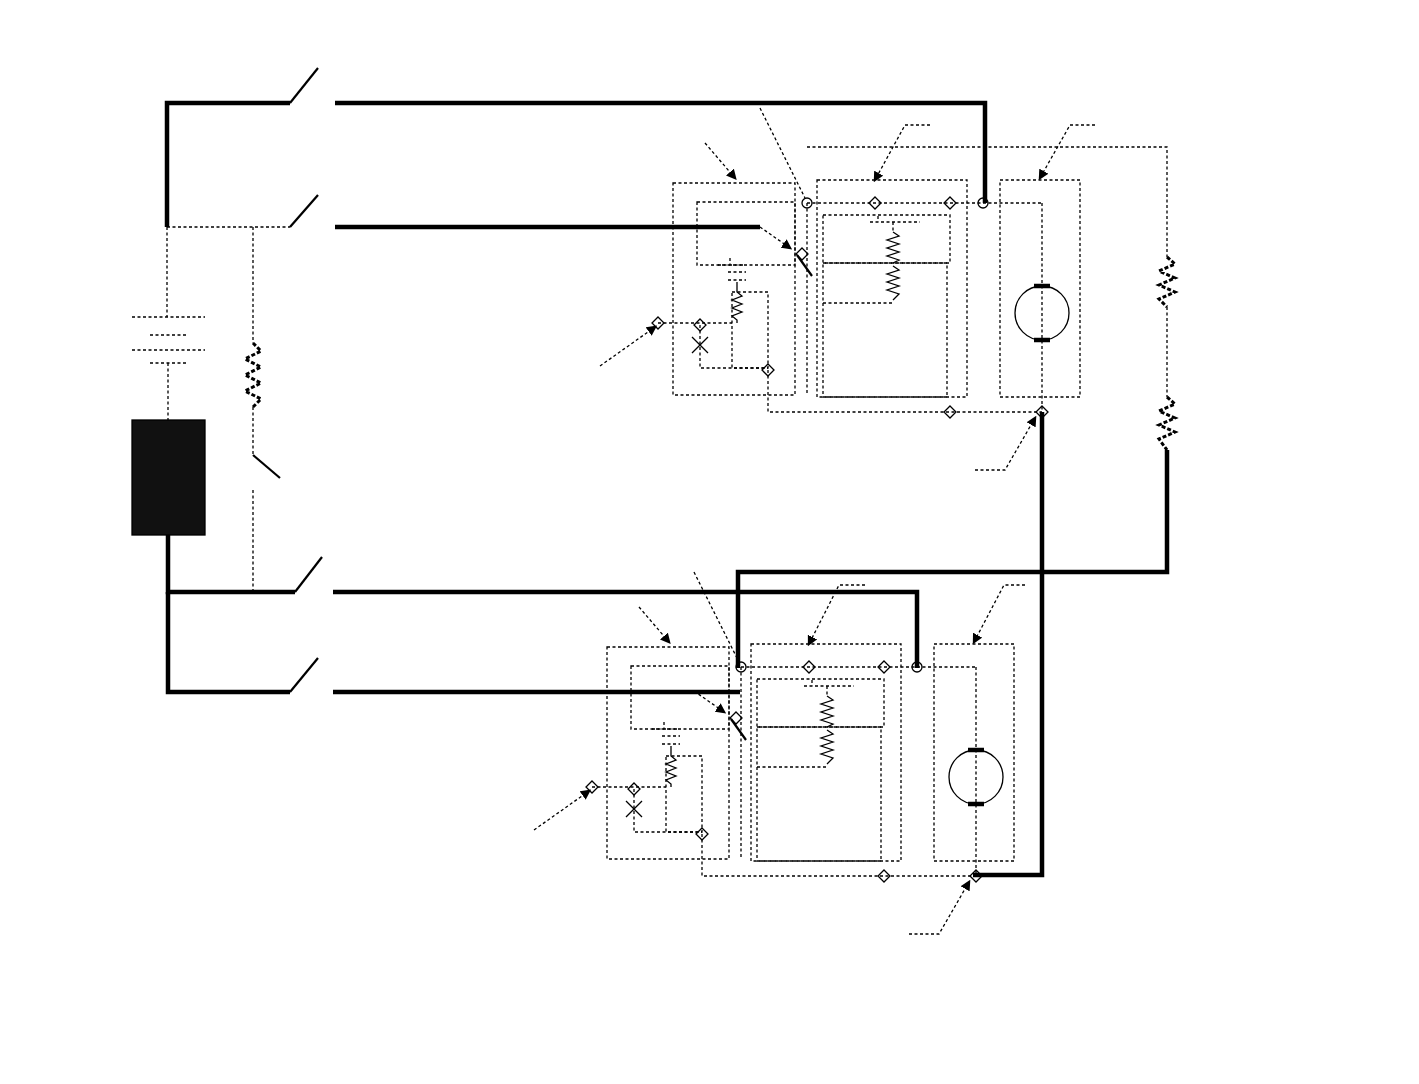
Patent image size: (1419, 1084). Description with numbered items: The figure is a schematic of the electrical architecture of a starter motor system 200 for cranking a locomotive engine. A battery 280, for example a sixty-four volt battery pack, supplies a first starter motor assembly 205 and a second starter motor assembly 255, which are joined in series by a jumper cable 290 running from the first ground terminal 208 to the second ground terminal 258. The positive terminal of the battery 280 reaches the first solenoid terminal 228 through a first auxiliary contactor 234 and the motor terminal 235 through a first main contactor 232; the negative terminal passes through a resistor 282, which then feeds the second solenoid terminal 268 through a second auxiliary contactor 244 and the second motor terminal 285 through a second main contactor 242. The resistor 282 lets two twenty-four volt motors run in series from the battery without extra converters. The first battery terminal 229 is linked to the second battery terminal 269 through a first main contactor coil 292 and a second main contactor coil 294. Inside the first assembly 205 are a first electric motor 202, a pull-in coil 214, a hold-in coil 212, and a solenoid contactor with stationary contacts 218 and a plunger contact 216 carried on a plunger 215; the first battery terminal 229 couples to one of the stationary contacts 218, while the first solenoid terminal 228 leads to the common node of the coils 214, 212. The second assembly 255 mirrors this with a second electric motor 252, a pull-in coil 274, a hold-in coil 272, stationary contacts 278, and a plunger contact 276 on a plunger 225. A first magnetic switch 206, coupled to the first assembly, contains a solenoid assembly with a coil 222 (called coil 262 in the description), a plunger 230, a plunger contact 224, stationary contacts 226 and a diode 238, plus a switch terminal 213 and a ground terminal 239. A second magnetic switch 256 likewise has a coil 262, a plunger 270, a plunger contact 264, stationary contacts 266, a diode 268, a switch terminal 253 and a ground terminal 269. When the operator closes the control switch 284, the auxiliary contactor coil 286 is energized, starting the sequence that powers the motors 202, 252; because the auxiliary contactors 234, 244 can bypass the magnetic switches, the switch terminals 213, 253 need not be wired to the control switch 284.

The starter motor system 200 is at (1272, 90).
The first electric motor 202 is at (1064, 300).
The first starter motor assembly 205 is at (942, 319).
The first magnetic switch 206 is at (714, 327).
The first ground terminal 208 is at (1050, 415).
The hold-in (HI) coil 212 is at (890, 284).
The switch terminal 213 is at (658, 316).
The pull-in (PI) coil 214 is at (890, 246).
The plunger 215 is at (893, 301).
The plunger contact 216 is at (872, 223).
The stationary contacts 218 is at (873, 201).
The first magnetic switch coil 222 is at (735, 306).
The plunger contact 224 is at (735, 278).
The plunger 225 is at (819, 794).
The stationary contacts 226 is at (722, 262).
The first solenoid terminal 228 is at (800, 275).
The first battery terminal 229 is at (805, 200).
The plunger 230 is at (744, 328).
The first main contactor 232 is at (302, 92).
The first auxiliary contactor 234 is at (300, 220).
The motor terminal 235 is at (986, 208).
The diode 238 is at (697, 352).
The ground terminal 239 is at (765, 374).
The second main contactor 242 is at (310, 580).
The second auxiliary contactor 244 is at (305, 690).
The second electric motor 252 is at (1029, 771).
The switch terminal 253 is at (564, 771).
The second starter motor assembly 255 is at (927, 769).
The second magnetic switch 256 is at (640, 773).
The second ground terminal 258 is at (1005, 890).
The coil 262 is at (640, 766).
The plunger contact 264 is at (648, 749).
The stationary contacts 266 is at (676, 715).
The second solenoid terminal 268 is at (660, 787).
The second battery terminal 269 is at (705, 749).
The plunger 270 is at (681, 794).
The hold-in (HI) coil 272 is at (796, 747).
The pull-in (PI) coil 274 is at (800, 711).
The plunger contact 276 is at (811, 690).
The stationary contacts 278 is at (820, 684).
The battery 280 is at (167, 315).
The resistor 282 is at (150, 540).
The control switch 284 is at (275, 476).
The second motor terminal 285 is at (951, 682).
The auxiliary contactor 1,2 coil 286 is at (268, 382).
The jumper cable 290 is at (1081, 740).
The first main contactor coil 292 is at (1177, 300).
The second main contactor coil 294 is at (1180, 450).